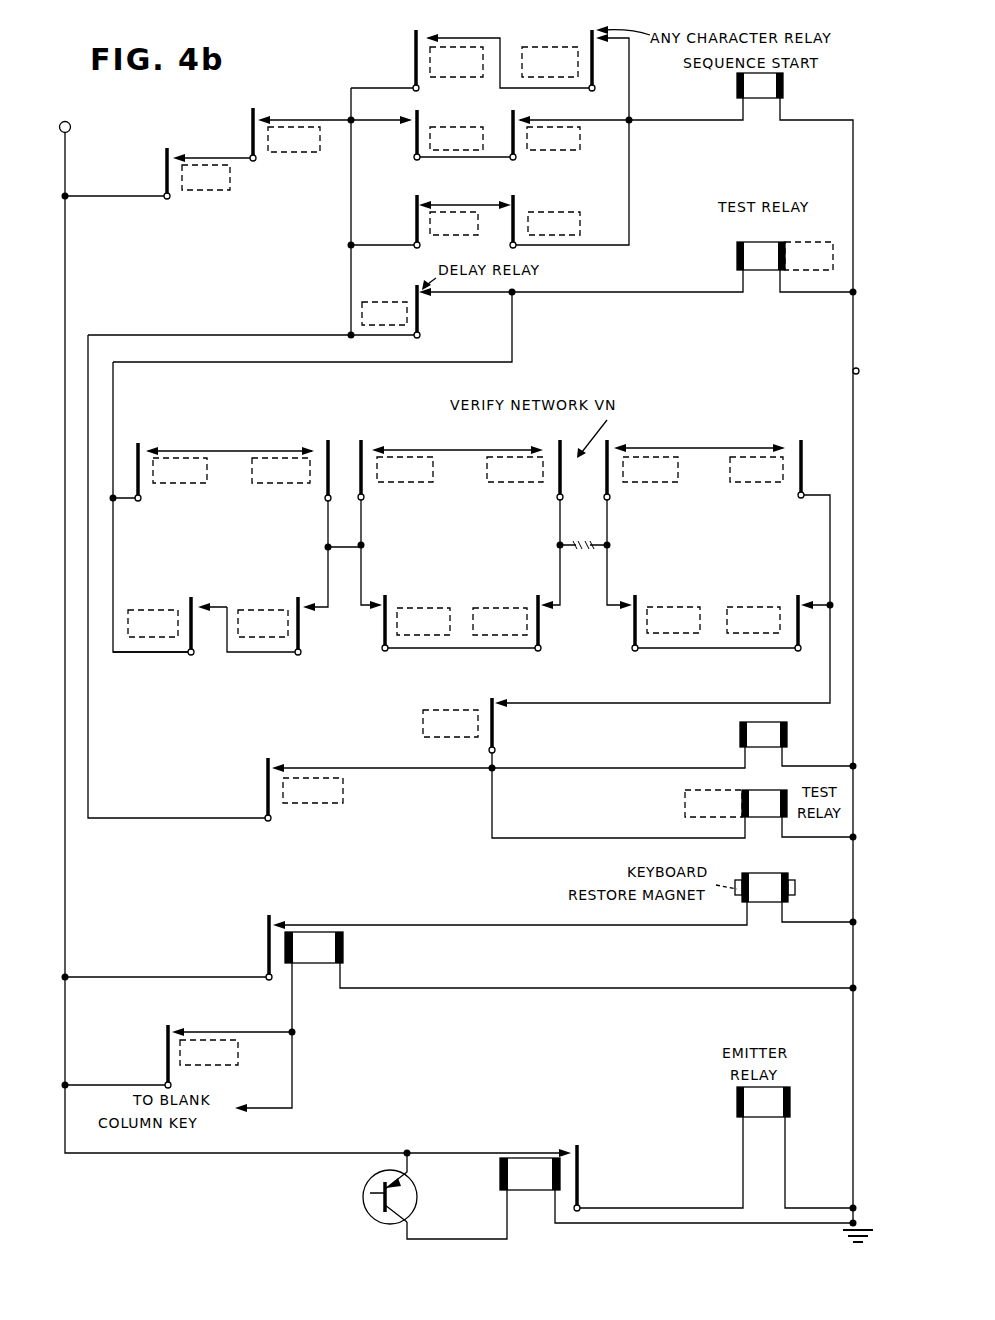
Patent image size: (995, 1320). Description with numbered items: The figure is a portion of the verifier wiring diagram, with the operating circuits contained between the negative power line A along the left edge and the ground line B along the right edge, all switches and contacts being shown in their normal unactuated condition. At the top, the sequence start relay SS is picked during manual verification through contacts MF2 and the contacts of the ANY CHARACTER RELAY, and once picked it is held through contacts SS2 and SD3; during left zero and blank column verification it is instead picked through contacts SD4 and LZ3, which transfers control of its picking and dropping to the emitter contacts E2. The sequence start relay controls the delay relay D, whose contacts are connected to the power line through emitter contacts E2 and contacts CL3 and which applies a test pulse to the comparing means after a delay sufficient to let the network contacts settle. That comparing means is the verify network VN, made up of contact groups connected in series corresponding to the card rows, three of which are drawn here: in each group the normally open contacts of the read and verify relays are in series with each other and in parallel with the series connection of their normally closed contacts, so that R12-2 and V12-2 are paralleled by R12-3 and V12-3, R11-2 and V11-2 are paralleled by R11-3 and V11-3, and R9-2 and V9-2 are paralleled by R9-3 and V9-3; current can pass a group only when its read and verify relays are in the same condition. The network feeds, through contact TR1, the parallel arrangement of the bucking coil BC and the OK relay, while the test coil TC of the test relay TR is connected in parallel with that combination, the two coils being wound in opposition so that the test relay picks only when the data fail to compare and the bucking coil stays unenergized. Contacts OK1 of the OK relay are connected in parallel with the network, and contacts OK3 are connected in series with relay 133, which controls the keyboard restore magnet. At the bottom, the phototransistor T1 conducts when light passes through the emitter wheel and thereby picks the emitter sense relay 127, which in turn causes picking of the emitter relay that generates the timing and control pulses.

The negative power line A is at (71, 127).
The ground line B is at (853, 371).
The contacts CL3 is at (178, 155).
The emitter contacts E2 is at (264, 116).
The contacts MF2 is at (410, 36).
The contacts SS2 is at (526, 118).
The contacts SD3 is at (405, 118).
The contacts LZ3 is at (423, 202).
The contacts SD4 is at (502, 202).
The delay relay D is at (396, 311).
The sequence start relay SS is at (760, 85).
The test relay TR is at (757, 252).
The OK relay OK is at (763, 734).
The normally open contacts of read relay R12 R12-2 is at (155, 448).
The normally open contacts of verify relay V12 V12-2 is at (308, 446).
The normally closed contacts of read relay R12 R12-3 is at (196, 594).
The normally closed contacts of verify relay V12 V12-3 is at (306, 594).
The normally open contacts of read relay R11 R11-2 is at (375, 448).
The normally open contacts of verify relay V11 V11-2 is at (540, 446).
The normally closed contacts of read relay R11 R11-3 is at (376, 596).
The normally closed contacts of verify relay V11 V11-3 is at (545, 596).
The normally open contacts of read relay R9 R9-2 is at (620, 446).
The normally open contacts of verify relay V9 V9-2 is at (778, 444).
The normally closed contacts of read relay R9 R9-3 is at (620, 598).
The normally closed contacts of verify relay V9 V9-3 is at (807, 596).
The contact TR1 is at (504, 698).
The contacts OK1 is at (281, 758).
The relay 133 is at (290, 915).
The contacts OK3 is at (183, 1025).
The emitter sense relay 127 is at (560, 1148).
The phototransistor T1 is at (370, 1192).